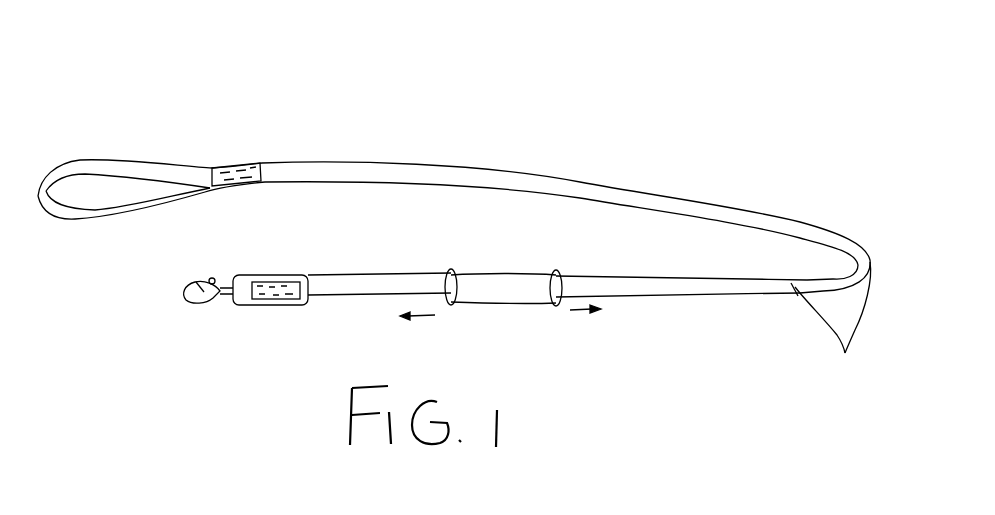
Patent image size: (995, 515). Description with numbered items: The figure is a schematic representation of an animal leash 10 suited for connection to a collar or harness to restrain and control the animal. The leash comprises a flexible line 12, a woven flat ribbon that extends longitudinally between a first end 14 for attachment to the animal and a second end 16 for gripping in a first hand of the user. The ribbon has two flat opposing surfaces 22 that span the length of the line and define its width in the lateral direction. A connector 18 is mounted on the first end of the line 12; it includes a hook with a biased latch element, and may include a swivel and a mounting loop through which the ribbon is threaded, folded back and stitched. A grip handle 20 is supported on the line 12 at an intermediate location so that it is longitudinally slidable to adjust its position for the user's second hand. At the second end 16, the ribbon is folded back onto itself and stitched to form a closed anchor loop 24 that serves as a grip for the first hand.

The animal leash 10 is at (415, 95).
The flexible line 12 is at (588, 197).
The first end 14 is at (235, 335).
The second end 16 is at (241, 130).
The connector 18 is at (220, 294).
The grip handle 20 is at (507, 315).
The flat opposing surfaces 22 is at (831, 330).
The closed anchor loop 24 is at (80, 157).